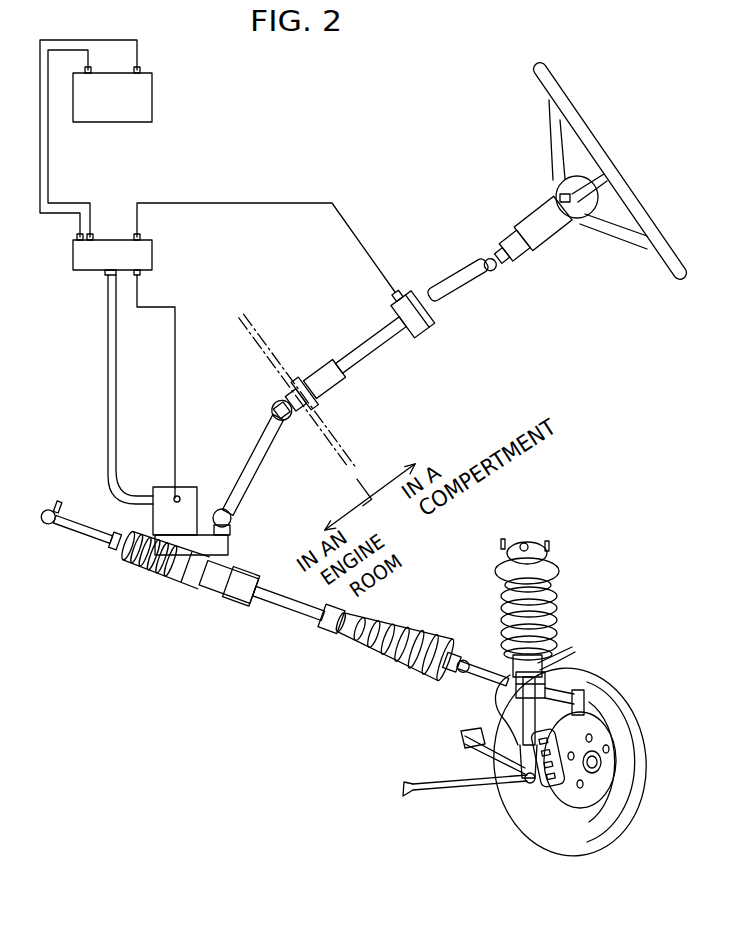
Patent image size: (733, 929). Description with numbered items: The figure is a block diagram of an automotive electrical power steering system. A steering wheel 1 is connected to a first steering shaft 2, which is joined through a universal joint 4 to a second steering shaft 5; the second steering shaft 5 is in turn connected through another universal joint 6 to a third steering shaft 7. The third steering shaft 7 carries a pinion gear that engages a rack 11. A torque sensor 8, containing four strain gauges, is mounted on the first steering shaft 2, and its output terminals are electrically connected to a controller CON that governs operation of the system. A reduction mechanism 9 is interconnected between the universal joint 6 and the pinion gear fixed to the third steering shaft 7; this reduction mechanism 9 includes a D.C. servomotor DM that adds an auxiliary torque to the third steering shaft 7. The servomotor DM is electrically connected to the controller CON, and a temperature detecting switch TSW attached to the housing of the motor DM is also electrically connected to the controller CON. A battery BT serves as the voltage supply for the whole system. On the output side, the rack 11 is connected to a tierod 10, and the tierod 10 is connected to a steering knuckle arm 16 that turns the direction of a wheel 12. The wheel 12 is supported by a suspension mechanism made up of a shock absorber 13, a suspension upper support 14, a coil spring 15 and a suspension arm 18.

The steering wheel 1 is at (592, 128).
The first steering shaft 2 is at (491, 271).
The universal joint 4 is at (272, 404).
The second steering shaft 5 is at (256, 462).
The universal joint 6 is at (233, 519).
The third steering shaft 7 is at (208, 592).
The torque sensor 8 is at (427, 336).
The reduction mechanism 9 is at (158, 540).
The tierod 10 is at (88, 540).
The rack 11 is at (185, 582).
The wheel 12 is at (586, 840).
The shock absorber 13 is at (568, 665).
The suspension upper support 14 is at (550, 558).
The coil spring 15 is at (555, 601).
The steering knuckle arm 16 is at (594, 682).
The suspension arm 18 is at (484, 762).
The battery BT is at (138, 101).
The controller CON is at (84, 273).
The D.C. servomotor DM is at (166, 498).
The temperature detecting switch TSW is at (191, 488).